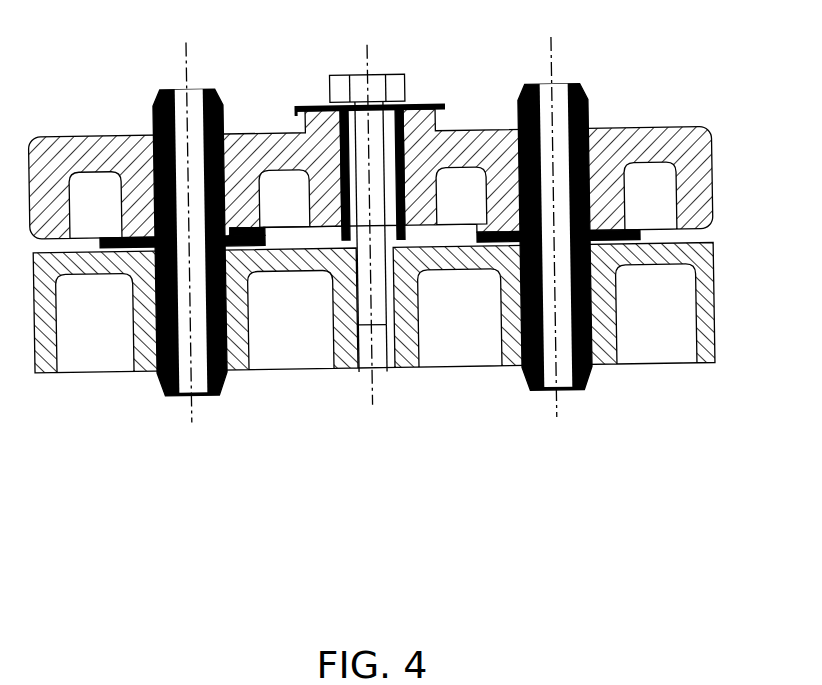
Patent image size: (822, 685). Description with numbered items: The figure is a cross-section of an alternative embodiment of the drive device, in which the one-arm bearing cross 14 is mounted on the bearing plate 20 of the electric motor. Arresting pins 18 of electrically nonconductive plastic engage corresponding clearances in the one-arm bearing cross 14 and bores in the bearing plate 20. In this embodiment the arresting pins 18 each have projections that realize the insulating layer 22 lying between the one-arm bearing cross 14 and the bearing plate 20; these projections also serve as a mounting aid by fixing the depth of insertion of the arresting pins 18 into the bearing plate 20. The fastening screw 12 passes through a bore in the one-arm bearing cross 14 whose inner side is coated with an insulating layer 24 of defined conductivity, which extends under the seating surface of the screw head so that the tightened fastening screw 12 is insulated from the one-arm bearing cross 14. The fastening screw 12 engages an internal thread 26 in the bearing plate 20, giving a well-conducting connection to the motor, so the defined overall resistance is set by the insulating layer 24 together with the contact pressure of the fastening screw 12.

The fastening screw 12 is at (400, 79).
The one-arm bearing cross 14 is at (705, 140).
The arresting pins 18 is at (223, 391).
The bearing plate 20 is at (715, 341).
The insulating layers 22 is at (262, 234).
The insulating layer 24 is at (303, 112).
The internal thread 26 is at (387, 375).